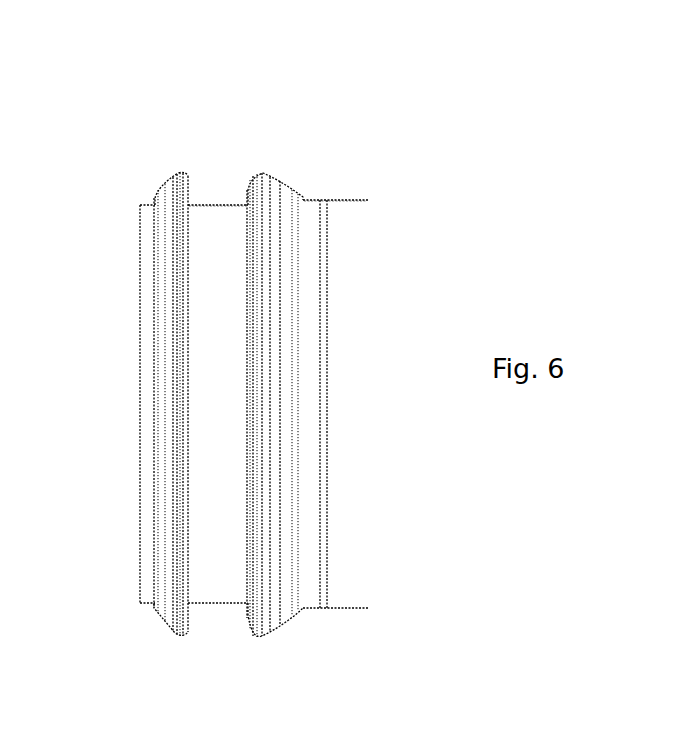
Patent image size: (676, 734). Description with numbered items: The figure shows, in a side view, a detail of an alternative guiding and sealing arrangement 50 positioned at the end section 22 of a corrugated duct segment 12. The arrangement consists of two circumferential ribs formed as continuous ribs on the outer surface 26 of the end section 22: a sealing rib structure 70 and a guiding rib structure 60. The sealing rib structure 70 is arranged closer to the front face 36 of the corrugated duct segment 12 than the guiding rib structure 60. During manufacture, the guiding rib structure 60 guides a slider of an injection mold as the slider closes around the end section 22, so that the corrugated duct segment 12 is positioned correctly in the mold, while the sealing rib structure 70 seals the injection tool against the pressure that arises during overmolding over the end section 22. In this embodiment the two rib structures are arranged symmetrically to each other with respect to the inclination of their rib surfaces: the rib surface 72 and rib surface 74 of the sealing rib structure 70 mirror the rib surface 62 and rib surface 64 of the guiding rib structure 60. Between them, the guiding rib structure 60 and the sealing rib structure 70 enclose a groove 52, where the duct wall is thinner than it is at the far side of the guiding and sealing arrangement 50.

The guiding and sealing arrangement 50 is at (150, 155).
The corrugated duct segment 12 is at (345, 217).
The end section 22 is at (233, 654).
The outer surface 26 is at (390, 423).
The front face 36 is at (140, 412).
The groove 52 is at (233, 358).
The guiding rib structure 60 is at (290, 175).
The rib surface 62 is at (275, 290).
The rib surface 64 is at (262, 230).
The sealing rib structure 70 is at (156, 189).
The rib surface 72 is at (166, 296).
The rib surface 74 is at (190, 218).